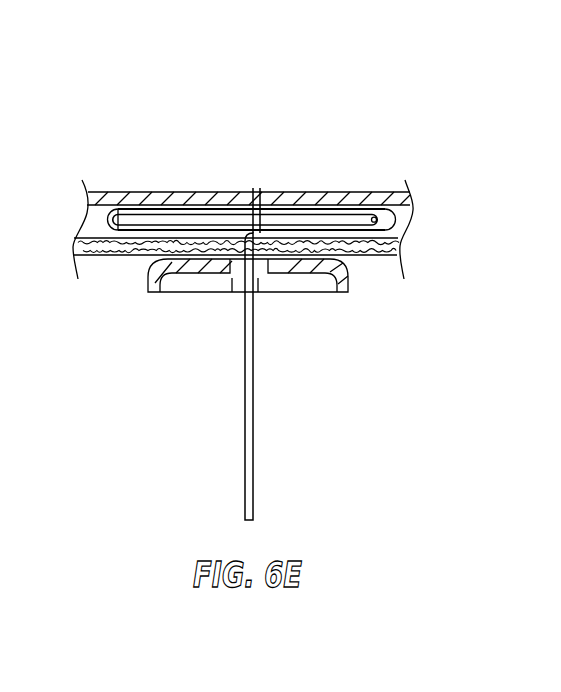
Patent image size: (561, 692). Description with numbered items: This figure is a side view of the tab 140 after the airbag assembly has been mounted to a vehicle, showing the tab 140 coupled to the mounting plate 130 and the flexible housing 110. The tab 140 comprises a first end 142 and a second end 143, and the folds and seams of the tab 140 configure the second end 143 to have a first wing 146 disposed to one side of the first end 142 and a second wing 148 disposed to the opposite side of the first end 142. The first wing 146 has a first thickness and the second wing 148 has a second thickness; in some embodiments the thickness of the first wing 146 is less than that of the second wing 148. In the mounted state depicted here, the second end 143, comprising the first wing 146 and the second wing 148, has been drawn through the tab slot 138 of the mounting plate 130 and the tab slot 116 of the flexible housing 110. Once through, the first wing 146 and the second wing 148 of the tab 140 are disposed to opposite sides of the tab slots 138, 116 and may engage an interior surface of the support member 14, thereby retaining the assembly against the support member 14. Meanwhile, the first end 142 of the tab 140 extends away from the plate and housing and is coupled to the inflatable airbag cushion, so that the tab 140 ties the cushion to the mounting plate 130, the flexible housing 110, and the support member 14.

The tab 140 is at (336, 85).
The support member 14 is at (200, 205).
The first wing 146 is at (140, 213).
The second end 143 is at (257, 210).
The second wing 148 is at (362, 205).
The flexible housing 110 is at (117, 256).
The mounting plate 130 is at (155, 292).
The tab slot 138 is at (231, 284).
The tab slot 116 is at (259, 284).
The first end 142 is at (244, 500).